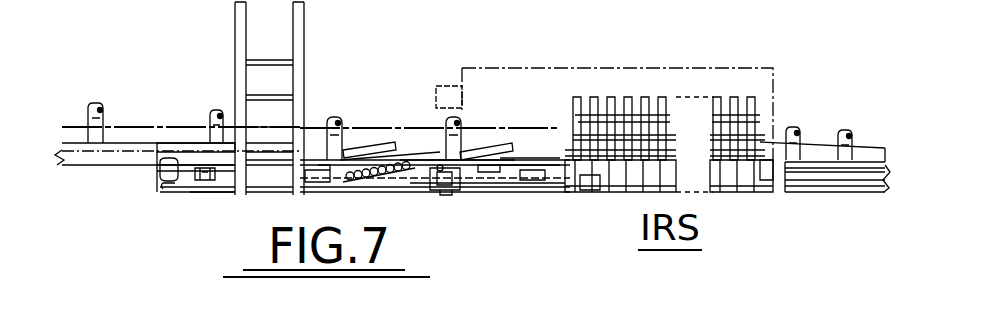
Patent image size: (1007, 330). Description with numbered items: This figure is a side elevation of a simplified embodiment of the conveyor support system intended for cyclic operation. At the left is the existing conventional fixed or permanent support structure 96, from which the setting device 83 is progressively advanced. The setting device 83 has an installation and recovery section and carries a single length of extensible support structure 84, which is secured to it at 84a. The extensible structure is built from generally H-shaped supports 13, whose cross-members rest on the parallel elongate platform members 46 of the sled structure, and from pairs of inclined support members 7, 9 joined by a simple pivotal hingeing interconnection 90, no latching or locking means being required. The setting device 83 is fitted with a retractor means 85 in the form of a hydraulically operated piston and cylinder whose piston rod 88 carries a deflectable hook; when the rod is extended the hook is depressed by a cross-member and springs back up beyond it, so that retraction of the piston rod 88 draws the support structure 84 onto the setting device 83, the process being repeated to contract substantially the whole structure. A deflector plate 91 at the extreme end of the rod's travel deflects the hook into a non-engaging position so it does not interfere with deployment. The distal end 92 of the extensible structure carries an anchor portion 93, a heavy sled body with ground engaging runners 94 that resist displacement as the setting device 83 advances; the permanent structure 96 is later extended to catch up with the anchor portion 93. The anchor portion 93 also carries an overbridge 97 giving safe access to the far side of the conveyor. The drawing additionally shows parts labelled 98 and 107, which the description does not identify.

The inclined support member 7 is at (415, 150).
The inclined support member 9 is at (372, 147).
The H-shaped support 13 is at (478, 194).
The elongate member 46 is at (550, 157).
The setting device 83 is at (620, 65).
The support structure 84 is at (489, 130).
The securing point of support structure 84a is at (763, 150).
The retractor means 85 is at (600, 160).
The piston rod 88 is at (555, 150).
The pivotal hingeing interconnection 90 is at (522, 152).
The deflector plate 91 is at (460, 178).
The distal end 92 is at (333, 175).
The anchor portion 93 is at (203, 190).
The ground engaging runner 94 is at (183, 198).
The permanent support structure 96 is at (107, 132).
The overbridge 97 is at (300, 47).
The guide rail 98 is at (393, 148).
The support bracket 107 is at (178, 143).